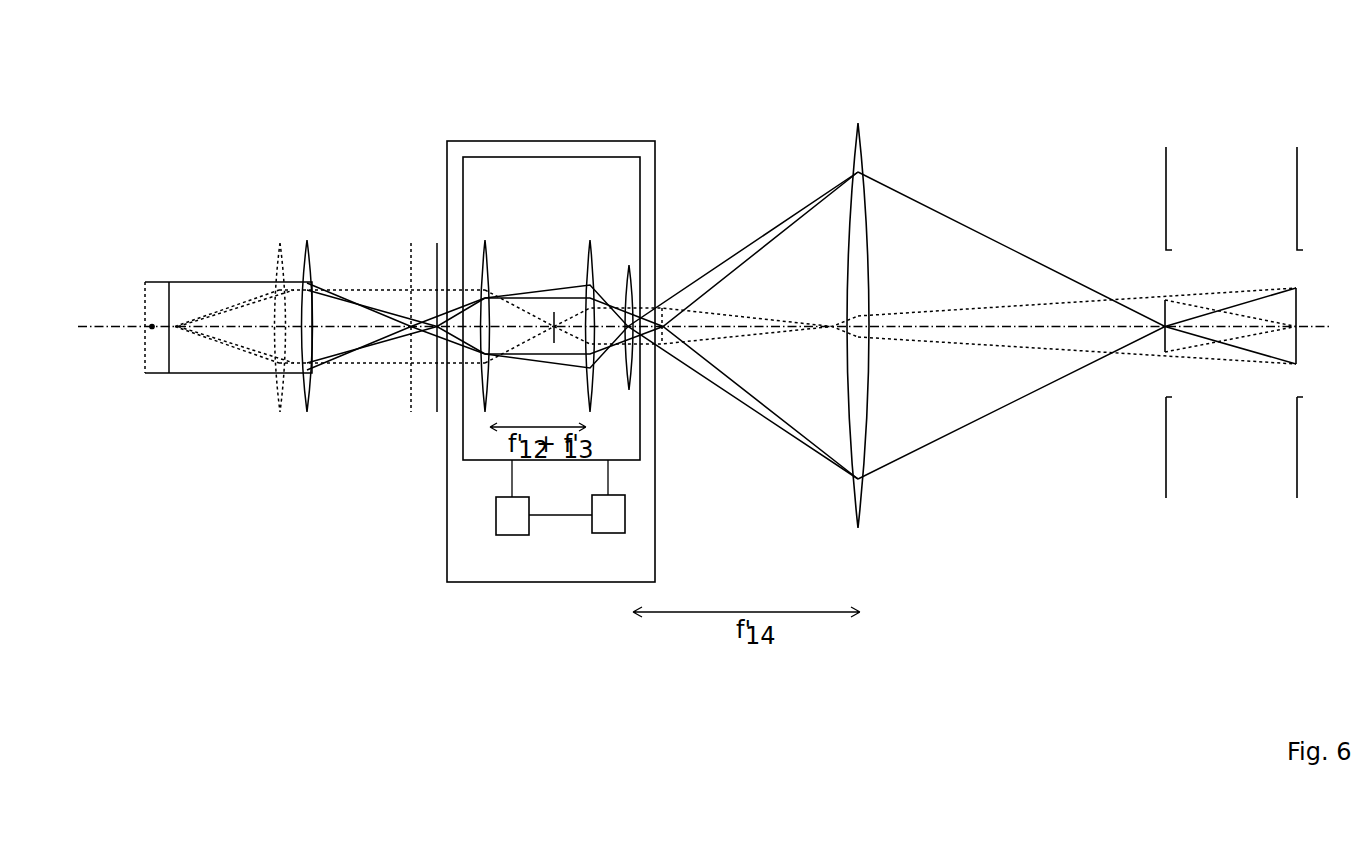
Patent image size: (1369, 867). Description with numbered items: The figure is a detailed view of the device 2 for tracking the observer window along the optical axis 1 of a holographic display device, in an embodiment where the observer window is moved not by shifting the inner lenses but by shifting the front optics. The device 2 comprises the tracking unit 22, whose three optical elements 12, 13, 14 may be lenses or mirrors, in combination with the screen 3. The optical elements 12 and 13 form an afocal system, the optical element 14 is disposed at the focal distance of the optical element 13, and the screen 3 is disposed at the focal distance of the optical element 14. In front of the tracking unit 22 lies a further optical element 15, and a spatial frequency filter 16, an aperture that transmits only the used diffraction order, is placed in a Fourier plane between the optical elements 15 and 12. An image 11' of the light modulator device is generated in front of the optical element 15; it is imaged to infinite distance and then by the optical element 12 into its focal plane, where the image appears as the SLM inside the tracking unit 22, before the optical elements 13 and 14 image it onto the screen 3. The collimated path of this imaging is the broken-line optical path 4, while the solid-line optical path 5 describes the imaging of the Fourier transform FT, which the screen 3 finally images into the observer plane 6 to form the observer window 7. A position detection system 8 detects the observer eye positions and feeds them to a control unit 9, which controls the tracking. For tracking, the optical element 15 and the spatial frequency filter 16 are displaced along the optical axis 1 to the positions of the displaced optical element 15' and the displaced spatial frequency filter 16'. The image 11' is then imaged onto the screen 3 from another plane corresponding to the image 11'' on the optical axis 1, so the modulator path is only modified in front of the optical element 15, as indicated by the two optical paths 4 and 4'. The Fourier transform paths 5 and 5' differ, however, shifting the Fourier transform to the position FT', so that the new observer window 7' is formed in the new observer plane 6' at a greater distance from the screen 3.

The optical axis 1 is at (103, 328).
The device for tracking the observer window 2 is at (622, 140).
The screen 3 is at (860, 121).
The optical path 4 is at (212, 381).
The optical path 4' is at (236, 383).
The optical path 5 is at (396, 280).
The optical path 5' is at (396, 246).
The observer plane 6 is at (1166, 341).
The new observer plane 6' is at (1297, 341).
The observer window 7 is at (1196, 275).
The new observer window 7' is at (1327, 292).
The position detection system 8 is at (577, 496).
The control unit 9 is at (512, 497).
The image of the light modulator device 11' is at (108, 255).
The image of the light modulator device 11'' is at (209, 246).
The optical element 12 is at (485, 238).
The optical element 13 is at (590, 241).
The optical element 14 is at (628, 258).
The optical element 15 is at (235, 246).
The displaced optical element 15' is at (281, 246).
The spatial frequency filter 16 is at (385, 235).
The displaced spatial frequency filter 16' is at (423, 218).
The tracking unit 22 is at (518, 156).
The image of the light modulator device within the tracking unit SLM is at (554, 313).
The Fourier transform FT is at (494, 419).
The displaced Fourier transform FT' is at (556, 354).